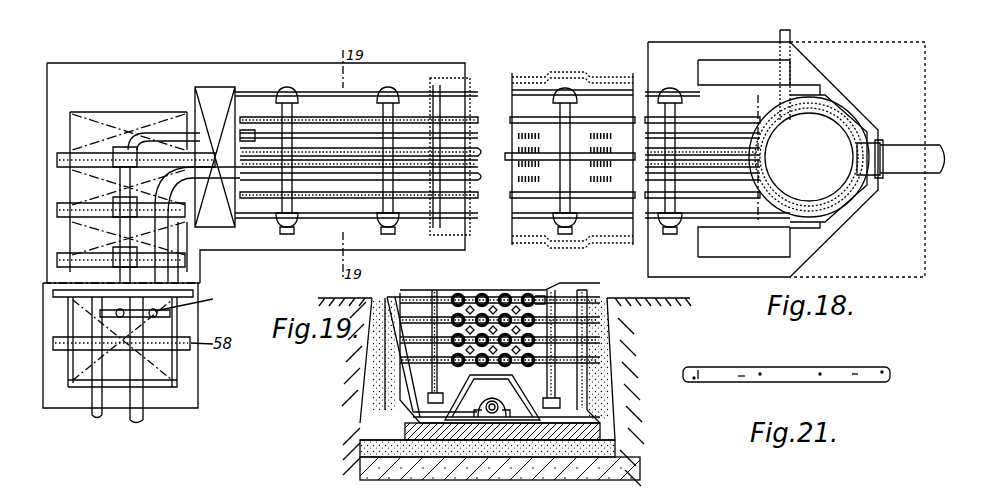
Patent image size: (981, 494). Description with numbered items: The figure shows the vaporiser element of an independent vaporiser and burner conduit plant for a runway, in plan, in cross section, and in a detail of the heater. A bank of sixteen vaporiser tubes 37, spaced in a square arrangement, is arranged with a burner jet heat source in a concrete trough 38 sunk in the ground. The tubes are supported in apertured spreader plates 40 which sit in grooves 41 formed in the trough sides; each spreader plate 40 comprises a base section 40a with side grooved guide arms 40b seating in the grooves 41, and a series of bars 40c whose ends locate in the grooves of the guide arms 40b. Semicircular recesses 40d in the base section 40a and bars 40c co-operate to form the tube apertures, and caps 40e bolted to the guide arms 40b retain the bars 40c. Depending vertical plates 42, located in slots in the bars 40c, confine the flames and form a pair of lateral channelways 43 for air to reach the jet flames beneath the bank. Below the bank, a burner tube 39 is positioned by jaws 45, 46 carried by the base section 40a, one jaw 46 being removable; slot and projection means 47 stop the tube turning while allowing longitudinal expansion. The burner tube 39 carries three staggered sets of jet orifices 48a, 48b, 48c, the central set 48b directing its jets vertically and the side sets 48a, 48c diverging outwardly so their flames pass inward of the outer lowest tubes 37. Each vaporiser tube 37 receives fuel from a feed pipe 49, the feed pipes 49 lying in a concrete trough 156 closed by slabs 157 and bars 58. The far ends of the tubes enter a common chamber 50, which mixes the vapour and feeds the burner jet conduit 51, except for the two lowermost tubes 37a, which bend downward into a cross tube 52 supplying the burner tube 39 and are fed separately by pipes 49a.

In FIG. 18, the vaporiser tube 37 is at (481, 177).
In FIG. 19, the vaporiser tube 37 is at (537, 297).
In FIG. 18, the pair of lowermost vaporiser tubes 37a is at (765, 160).
In FIG. 19, the pair of lowermost vaporiser tubes 37a is at (517, 372).
In FIG. 18, the concrete trough 38 is at (462, 243).
In FIG. 19, the concrete trough 38 is at (615, 435).
In FIG. 18, the burner tube 39 is at (481, 152).
In FIG. 19, the burner tube 39 is at (492, 400).
In FIG. 21, the burner tube 39 is at (855, 381).
In FIG. 18, the spreader plate 40 is at (378, 140).
In FIG. 19, the spreader plate 40 is at (470, 286).
In FIG. 19, the base section 40a is at (560, 372).
In FIG. 19, the guide arm 40b is at (417, 368).
In FIG. 19, the bar 40c is at (415, 300).
In FIG. 19, the semicircular recess 40d is at (490, 300).
In FIG. 18, the cap 40e is at (280, 219).
In FIG. 19, the cap 40e is at (584, 296).
In FIG. 18, the groove 41 is at (282, 228).
In FIG. 18, the vertical plate 42 is at (328, 122).
In FIG. 19, the vertical plate 42 is at (435, 290).
In FIG. 19, the lateral channelway 43 is at (645, 300).
In FIG. 19, the jaw 45 is at (420, 423).
In FIG. 19, the removable jaw 46 is at (598, 437).
In FIG. 19, the slot and projection means 47 is at (545, 395).
In FIG. 21, the set of jet orifices 48a is at (778, 370).
In FIG. 21, the central set of jet orifices 48b is at (700, 376).
In FIG. 21, the set of jet orifices 48c is at (800, 382).
In FIG. 18, the feed pipe 49 is at (178, 197).
In FIG. 18, the feed pipe 49a is at (98, 347).
In FIG. 18, the common chamber 50 is at (827, 194).
In FIG. 18, the burner jet conduit 51 is at (910, 165).
In FIG. 18, the cross tube 52 is at (757, 104).
In FIG. 18, the bar 58 is at (186, 258).
In FIG. 18, the concrete trough 156 is at (196, 369).
In FIG. 18, the slab 157 is at (180, 323).